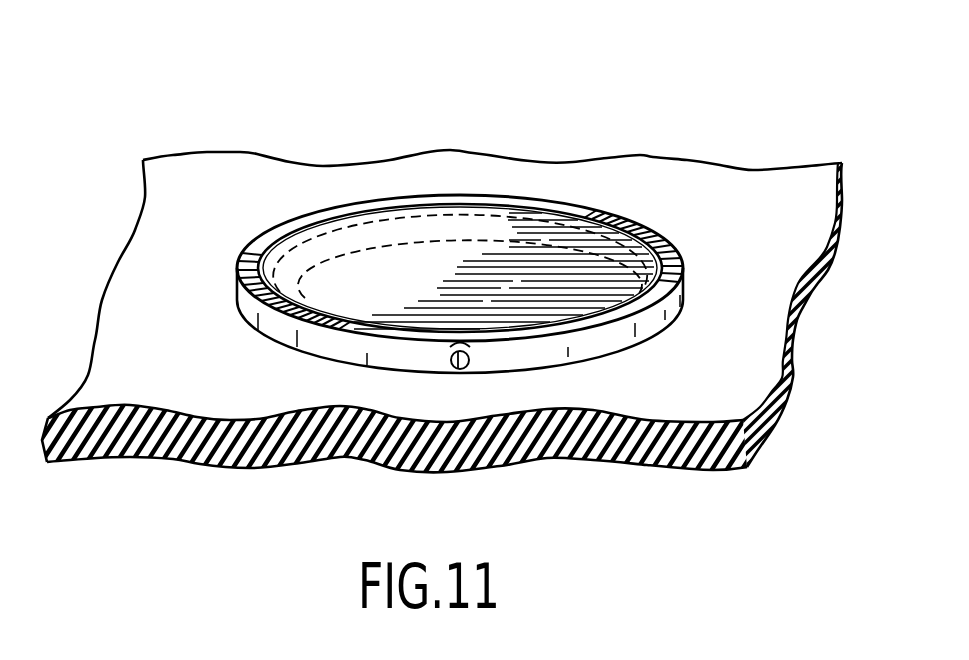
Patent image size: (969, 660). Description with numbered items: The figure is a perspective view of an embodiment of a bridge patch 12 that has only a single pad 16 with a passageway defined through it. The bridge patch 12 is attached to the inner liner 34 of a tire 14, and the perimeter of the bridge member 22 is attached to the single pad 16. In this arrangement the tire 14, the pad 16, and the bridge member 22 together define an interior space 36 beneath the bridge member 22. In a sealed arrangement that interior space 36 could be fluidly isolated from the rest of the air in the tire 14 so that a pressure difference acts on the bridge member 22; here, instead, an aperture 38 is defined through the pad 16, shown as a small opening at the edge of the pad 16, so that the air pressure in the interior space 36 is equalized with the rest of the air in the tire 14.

The bridge patch 12 is at (261, 153).
The tire 14 is at (666, 460).
The pad 16 is at (249, 272).
The bridge member 22 is at (654, 258).
The inner liner 34 is at (775, 181).
The interior space 36 is at (407, 258).
The aperture 38 is at (459, 369).